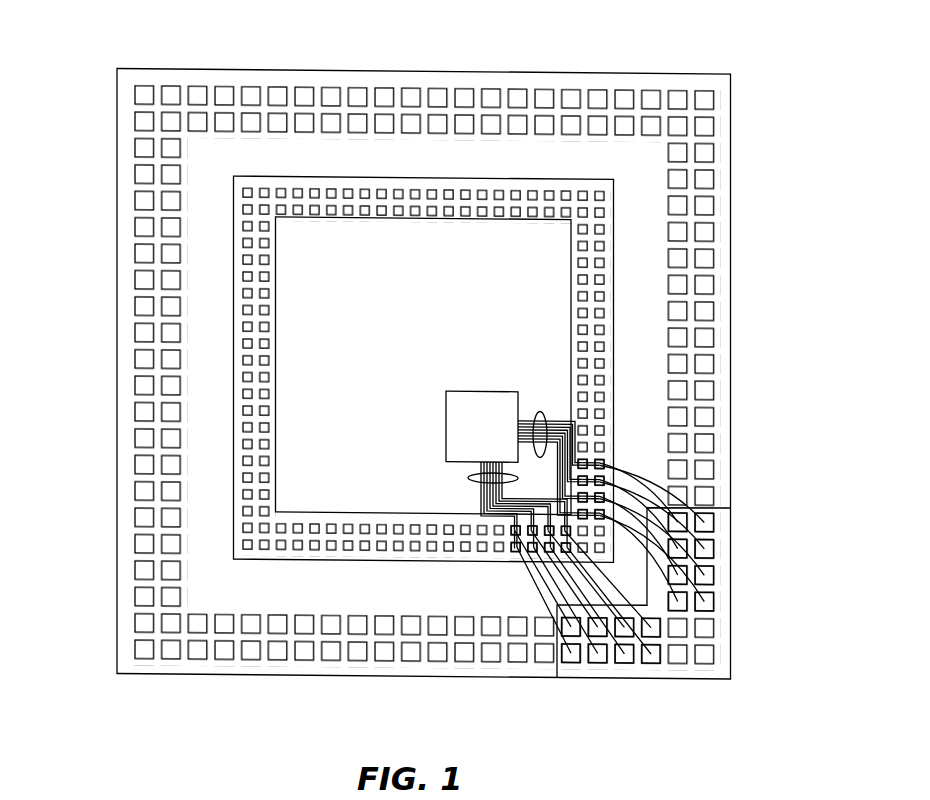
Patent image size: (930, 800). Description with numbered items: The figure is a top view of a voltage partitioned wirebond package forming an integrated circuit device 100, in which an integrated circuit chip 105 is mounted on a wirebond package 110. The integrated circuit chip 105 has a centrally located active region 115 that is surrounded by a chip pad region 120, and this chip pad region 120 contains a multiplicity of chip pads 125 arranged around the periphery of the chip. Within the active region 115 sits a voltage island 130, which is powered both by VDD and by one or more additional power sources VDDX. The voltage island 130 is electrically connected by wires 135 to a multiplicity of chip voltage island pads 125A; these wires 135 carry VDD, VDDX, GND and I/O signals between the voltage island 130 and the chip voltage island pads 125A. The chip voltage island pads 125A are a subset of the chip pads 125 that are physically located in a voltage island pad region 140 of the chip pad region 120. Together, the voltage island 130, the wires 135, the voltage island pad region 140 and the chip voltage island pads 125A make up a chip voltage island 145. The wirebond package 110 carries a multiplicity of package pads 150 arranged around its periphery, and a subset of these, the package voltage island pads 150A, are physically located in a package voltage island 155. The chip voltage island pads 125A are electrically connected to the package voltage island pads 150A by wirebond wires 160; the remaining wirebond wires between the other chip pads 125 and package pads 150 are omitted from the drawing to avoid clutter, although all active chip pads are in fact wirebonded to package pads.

The integrated circuit device 100 is at (430, 362).
The integrated circuit chip 105 is at (462, 179).
The wirebond package 110 is at (731, 190).
The active region 115 is at (292, 256).
The chip pad region 120 is at (425, 378).
The chip pads 125 is at (350, 190).
The chip voltage island pads 125A is at (607, 456).
The voltage island 130 is at (460, 395).
The wires 135 is at (537, 406).
The voltage island pad region 140 is at (512, 556).
The chip voltage island 145 is at (588, 441).
The package pads 150 is at (224, 94).
The package voltage island pads 150A is at (623, 652).
The package voltage island 155 is at (731, 552).
The wirebond wires 160 is at (603, 456).